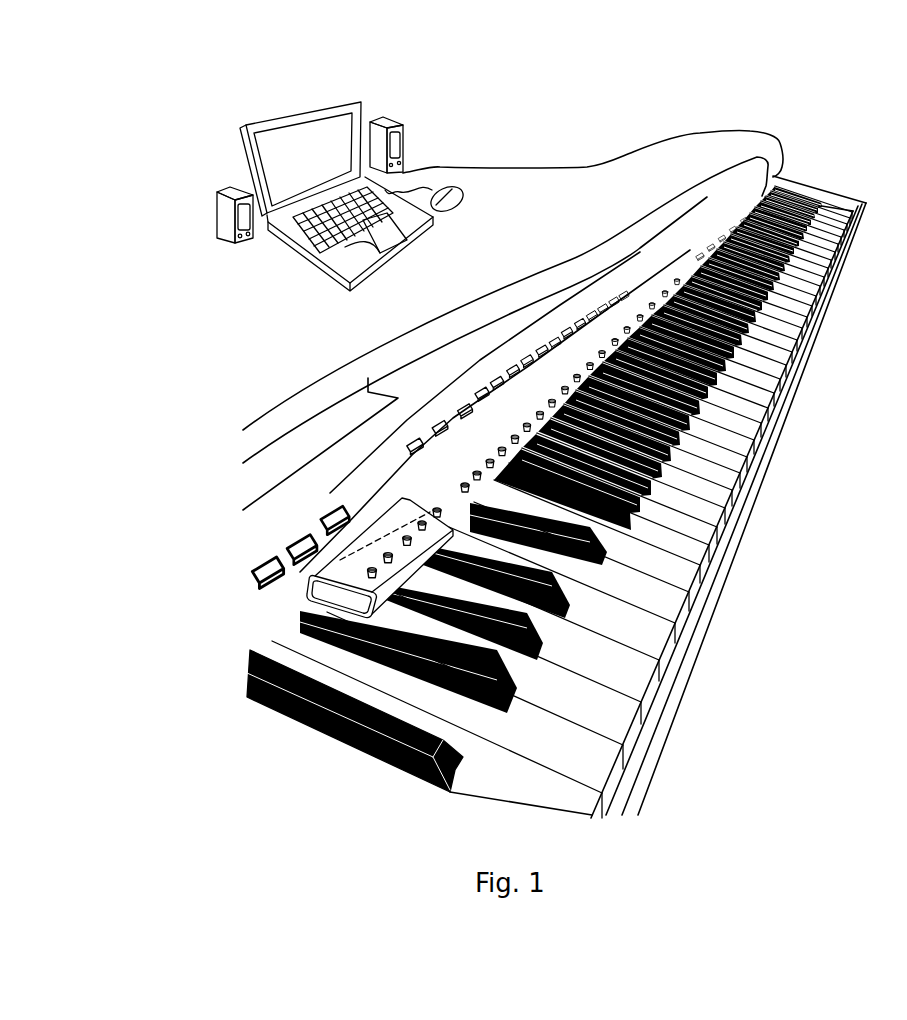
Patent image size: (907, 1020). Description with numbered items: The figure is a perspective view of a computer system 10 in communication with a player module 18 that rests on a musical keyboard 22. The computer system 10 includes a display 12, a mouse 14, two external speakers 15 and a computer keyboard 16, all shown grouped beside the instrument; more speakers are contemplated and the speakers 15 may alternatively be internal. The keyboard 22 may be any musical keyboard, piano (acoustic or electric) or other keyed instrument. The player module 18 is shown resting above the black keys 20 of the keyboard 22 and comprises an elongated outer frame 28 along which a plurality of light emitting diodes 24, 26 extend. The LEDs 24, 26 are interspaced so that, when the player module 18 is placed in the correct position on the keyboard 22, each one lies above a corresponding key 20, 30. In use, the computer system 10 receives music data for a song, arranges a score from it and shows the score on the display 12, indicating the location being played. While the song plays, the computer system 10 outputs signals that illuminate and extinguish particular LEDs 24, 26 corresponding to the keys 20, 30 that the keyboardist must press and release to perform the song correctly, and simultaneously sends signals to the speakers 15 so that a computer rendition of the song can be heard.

The computer system 10 is at (190, 229).
The display 12 is at (300, 130).
The mouse 14 is at (456, 200).
The speakers 15 is at (388, 120).
The computer keyboard 16 is at (321, 250).
The player module 18 is at (645, 307).
The black keys 20 is at (268, 652).
The keyboard 22 is at (780, 498).
The light emitting diodes 24 is at (525, 415).
The light emitting diodes 26 is at (470, 457).
The elongated outer frame 28 is at (327, 572).
The keys 30 is at (652, 633).